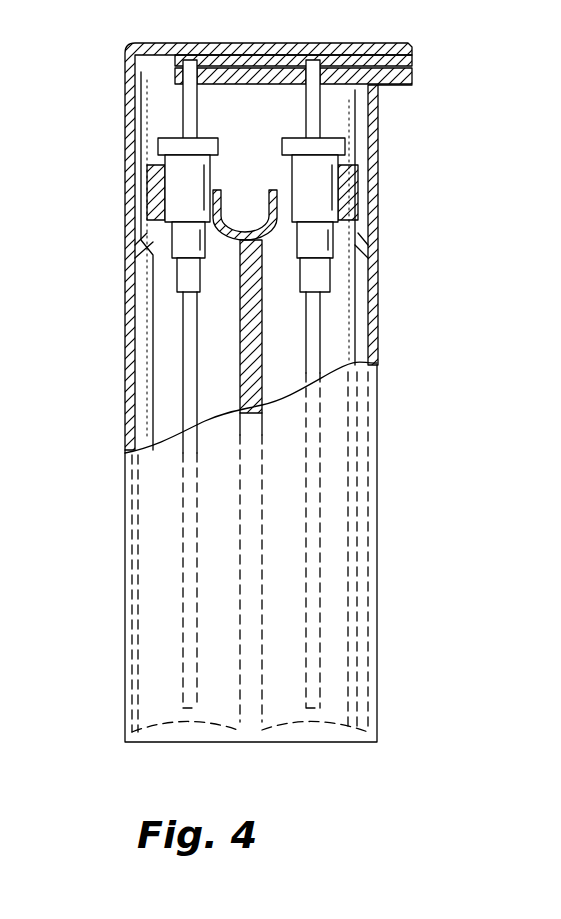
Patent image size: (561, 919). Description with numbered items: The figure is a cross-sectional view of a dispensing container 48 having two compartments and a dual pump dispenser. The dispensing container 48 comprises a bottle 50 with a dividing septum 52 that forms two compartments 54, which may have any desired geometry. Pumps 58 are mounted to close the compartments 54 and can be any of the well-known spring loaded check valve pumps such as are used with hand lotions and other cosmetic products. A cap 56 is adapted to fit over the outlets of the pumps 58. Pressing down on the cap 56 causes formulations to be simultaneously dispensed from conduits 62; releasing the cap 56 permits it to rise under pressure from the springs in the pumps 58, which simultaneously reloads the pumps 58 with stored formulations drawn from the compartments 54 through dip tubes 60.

The dispensing container 48 is at (473, 304).
The bottle 50 is at (378, 490).
The dividing septum 52 is at (243, 348).
The compartments 54 is at (165, 370).
The cap 56 is at (125, 102).
The pumps 58 is at (180, 188).
The dip tubes 60 is at (182, 305).
The conduits 62 is at (413, 53).